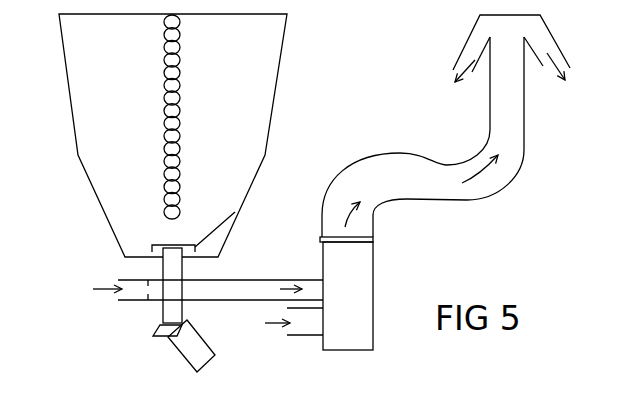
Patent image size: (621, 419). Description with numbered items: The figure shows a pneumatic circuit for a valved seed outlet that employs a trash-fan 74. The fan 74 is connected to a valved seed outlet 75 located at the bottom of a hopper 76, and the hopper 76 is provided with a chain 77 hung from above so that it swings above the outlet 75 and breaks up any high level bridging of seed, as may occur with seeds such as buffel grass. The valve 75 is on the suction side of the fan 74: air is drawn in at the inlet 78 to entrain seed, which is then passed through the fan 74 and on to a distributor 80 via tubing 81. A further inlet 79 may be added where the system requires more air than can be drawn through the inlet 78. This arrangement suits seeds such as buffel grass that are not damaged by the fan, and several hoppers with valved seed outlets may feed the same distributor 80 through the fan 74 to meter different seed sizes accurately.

The trash-fan 74 is at (365, 293).
The valved seed outlet 75 is at (155, 343).
The hopper 76 is at (272, 113).
The chain 77 is at (180, 117).
The air inlet 78 is at (108, 302).
The inlet 79 is at (273, 337).
The distributor 80 is at (482, 22).
The tubing 81 is at (423, 188).